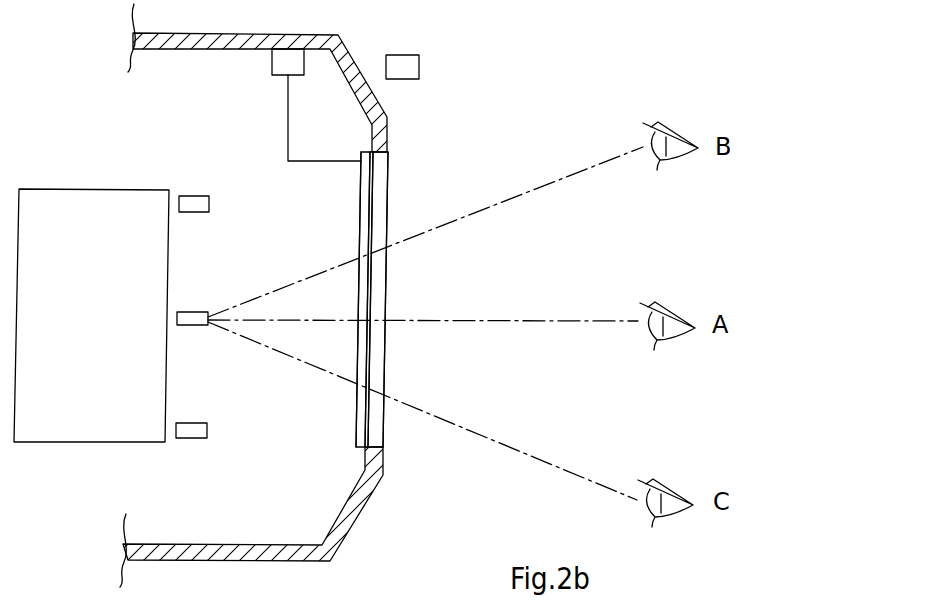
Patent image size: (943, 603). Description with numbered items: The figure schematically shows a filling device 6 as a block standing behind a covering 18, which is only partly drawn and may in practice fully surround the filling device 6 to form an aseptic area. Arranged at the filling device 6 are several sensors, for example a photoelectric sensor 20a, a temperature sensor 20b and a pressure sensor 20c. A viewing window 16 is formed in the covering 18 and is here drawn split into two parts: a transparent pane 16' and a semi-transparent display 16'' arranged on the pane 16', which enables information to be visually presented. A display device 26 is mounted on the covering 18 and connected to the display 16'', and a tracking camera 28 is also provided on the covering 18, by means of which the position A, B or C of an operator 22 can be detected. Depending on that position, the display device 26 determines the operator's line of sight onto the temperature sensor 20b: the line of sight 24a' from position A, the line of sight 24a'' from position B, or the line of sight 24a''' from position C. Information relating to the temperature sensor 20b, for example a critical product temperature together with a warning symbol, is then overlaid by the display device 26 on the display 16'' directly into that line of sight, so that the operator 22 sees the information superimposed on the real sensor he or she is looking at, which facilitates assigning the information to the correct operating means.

The filling device 6 is at (50, 203).
The viewing window 16 is at (402, 299).
The transparent pane 16' is at (409, 299).
The semi-transparent display 16'' is at (331, 299).
The covering 18 is at (348, 520).
The photoelectric sensor 20a is at (197, 202).
The temperature sensor 20b is at (197, 315).
The pressure sensor 20c is at (193, 428).
The operator 22 is at (680, 120).
The line of sight 24a' is at (423, 301).
The line of sight 24a'' is at (425, 232).
The line of sight 24a''' is at (422, 411).
The display device 26 is at (280, 60).
The tracking camera 28 is at (410, 69).